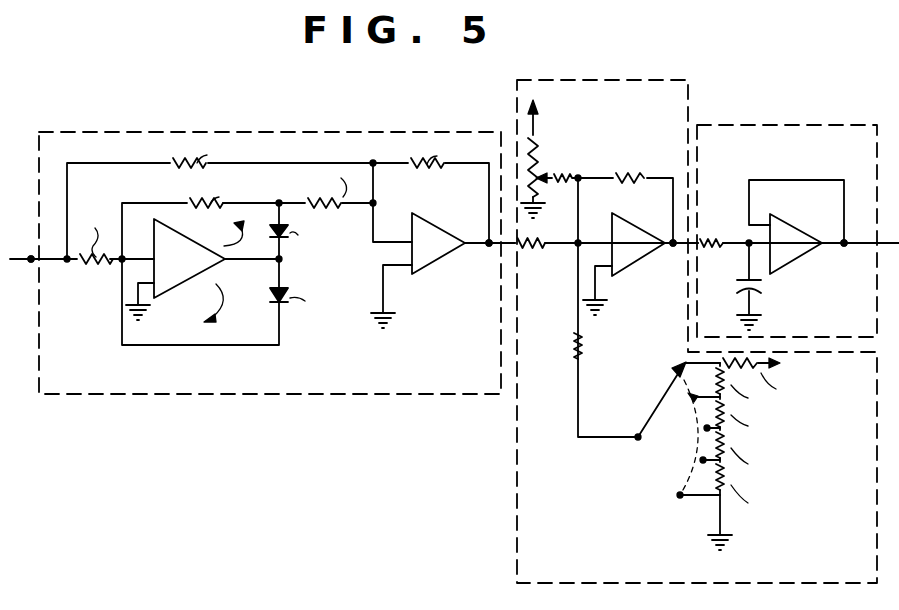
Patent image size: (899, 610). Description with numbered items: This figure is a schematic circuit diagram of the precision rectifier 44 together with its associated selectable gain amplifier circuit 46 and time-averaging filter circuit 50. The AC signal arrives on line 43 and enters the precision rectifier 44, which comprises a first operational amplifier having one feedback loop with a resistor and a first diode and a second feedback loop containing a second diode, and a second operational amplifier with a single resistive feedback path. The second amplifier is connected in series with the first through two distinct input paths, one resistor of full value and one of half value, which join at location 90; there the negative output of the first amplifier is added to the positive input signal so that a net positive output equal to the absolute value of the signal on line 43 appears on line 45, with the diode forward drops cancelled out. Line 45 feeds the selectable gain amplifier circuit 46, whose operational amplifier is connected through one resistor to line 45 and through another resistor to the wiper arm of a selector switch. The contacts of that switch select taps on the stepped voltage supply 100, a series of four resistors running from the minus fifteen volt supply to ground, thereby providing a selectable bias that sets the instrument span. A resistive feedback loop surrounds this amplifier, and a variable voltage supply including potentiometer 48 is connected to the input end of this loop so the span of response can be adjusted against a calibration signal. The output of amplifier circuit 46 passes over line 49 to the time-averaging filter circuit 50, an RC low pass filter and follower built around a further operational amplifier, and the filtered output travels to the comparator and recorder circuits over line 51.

The line 43 is at (31, 263).
The precision rectifier 44 is at (227, 396).
The line 45 is at (504, 245).
The selectable gain amplifier circuit 46 is at (697, 314).
The potentiometer 48 is at (541, 168).
The line 49 is at (688, 249).
The time-averaging filter circuit 50 is at (775, 123).
The line 51 is at (848, 243).
The location 90 is at (374, 203).
The stepped voltage supply 100 is at (735, 442).